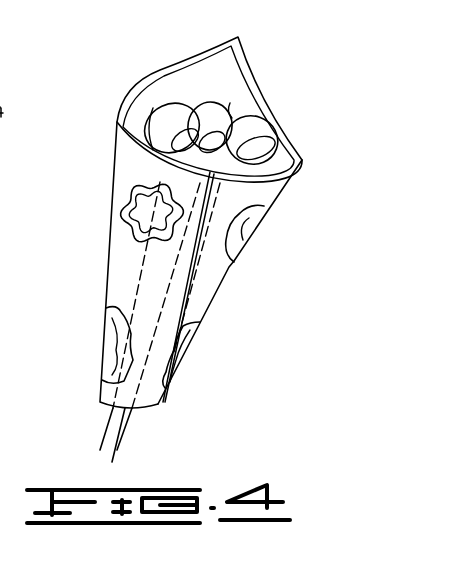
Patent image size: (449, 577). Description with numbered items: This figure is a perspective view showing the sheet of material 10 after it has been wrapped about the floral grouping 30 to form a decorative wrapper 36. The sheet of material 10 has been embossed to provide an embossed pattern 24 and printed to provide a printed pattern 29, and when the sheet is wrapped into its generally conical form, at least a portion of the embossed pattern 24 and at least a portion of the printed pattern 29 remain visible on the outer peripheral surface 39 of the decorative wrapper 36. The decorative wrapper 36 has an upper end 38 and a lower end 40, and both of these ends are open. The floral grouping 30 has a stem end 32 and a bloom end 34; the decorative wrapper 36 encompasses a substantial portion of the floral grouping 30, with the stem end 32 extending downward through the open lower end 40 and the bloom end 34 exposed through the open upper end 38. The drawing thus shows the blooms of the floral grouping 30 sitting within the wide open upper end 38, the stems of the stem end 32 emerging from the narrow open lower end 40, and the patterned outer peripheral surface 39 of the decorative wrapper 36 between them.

The sheet of material 10 is at (115, 162).
The embossed pattern 24 is at (121, 212).
The printed pattern 29 is at (250, 226).
The floral grouping 30 is at (173, 100).
The stem end 32 is at (128, 428).
The bloom end 34 is at (231, 101).
The decorative wrapper 36 is at (90, 262).
The upper end 38 is at (298, 163).
The outer peripheral surface 39 is at (208, 306).
The lower end 40 is at (100, 396).